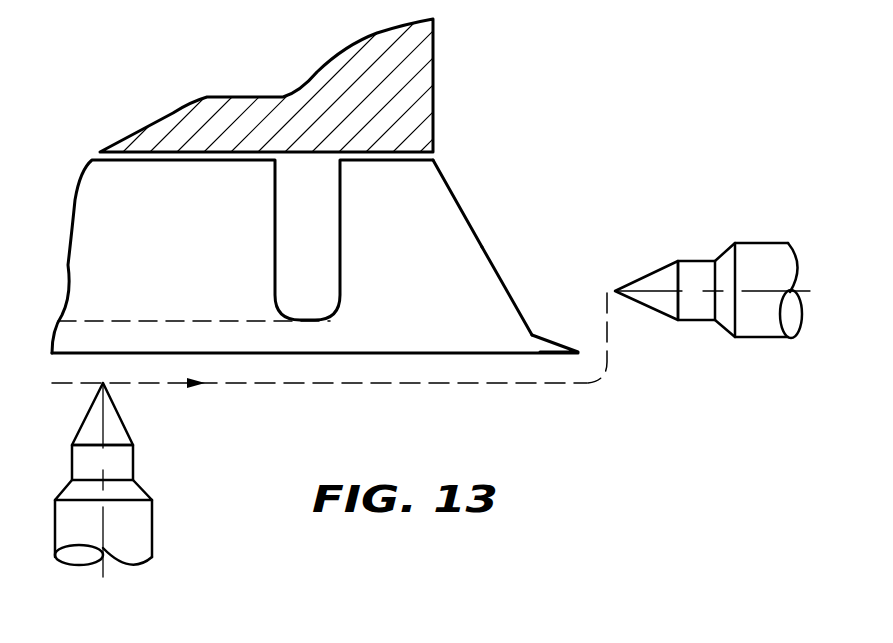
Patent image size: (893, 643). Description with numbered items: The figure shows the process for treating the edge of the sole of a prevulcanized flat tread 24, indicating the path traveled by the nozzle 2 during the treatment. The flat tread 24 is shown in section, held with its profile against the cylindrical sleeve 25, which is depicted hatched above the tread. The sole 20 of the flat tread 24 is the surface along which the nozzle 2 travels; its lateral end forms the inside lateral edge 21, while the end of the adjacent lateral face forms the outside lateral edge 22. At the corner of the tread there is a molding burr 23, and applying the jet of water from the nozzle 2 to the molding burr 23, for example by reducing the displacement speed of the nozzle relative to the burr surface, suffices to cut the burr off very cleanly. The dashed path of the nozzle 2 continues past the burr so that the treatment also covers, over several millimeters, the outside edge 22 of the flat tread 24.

The nozzle 2 is at (122, 535).
The sole 20 is at (233, 355).
The inside lateral edge 21 is at (398, 355).
The outside lateral edge 22 is at (495, 267).
The molding burr 23 is at (562, 353).
The flat tread 24 is at (442, 197).
The cylindrical sleeve 25 is at (415, 65).